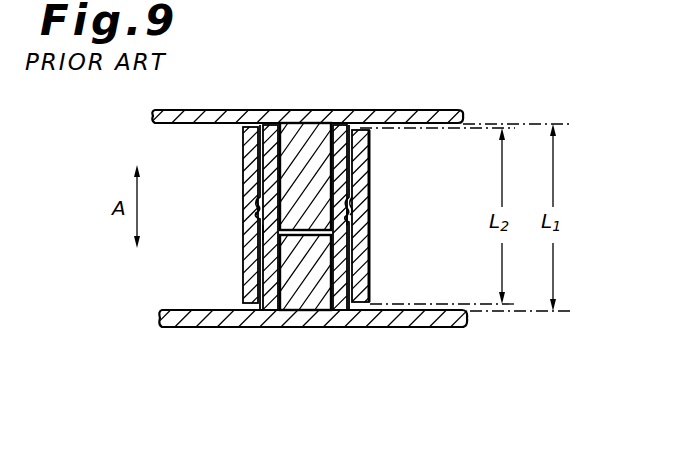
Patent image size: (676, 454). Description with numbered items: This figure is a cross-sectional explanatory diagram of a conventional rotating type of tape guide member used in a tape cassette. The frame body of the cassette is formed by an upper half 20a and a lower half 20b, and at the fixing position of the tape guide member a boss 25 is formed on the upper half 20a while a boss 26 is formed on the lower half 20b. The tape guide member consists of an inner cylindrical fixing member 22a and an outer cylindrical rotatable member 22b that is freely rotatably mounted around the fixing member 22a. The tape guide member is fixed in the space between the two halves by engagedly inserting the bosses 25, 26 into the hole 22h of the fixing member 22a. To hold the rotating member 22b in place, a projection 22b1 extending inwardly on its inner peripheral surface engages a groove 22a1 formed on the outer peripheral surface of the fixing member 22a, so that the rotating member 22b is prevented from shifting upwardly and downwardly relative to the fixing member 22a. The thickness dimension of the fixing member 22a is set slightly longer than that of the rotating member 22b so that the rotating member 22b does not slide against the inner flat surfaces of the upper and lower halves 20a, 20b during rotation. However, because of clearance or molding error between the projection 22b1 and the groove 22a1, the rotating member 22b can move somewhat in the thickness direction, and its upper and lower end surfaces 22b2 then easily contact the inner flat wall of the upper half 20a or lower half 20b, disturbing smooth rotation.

The upper half 20a is at (436, 110).
The lower half 20b is at (455, 327).
The inner cylindrical fixing member 22a is at (353, 158).
The groove 22a1 is at (257, 192).
The outer cylindrical rotatable member 22b is at (248, 197).
The projection 22b1 is at (245, 232).
The upper and lower end surfaces 22b2 is at (253, 110).
The hole 22h is at (250, 206).
The boss 25 is at (303, 158).
The boss 26 is at (307, 280).